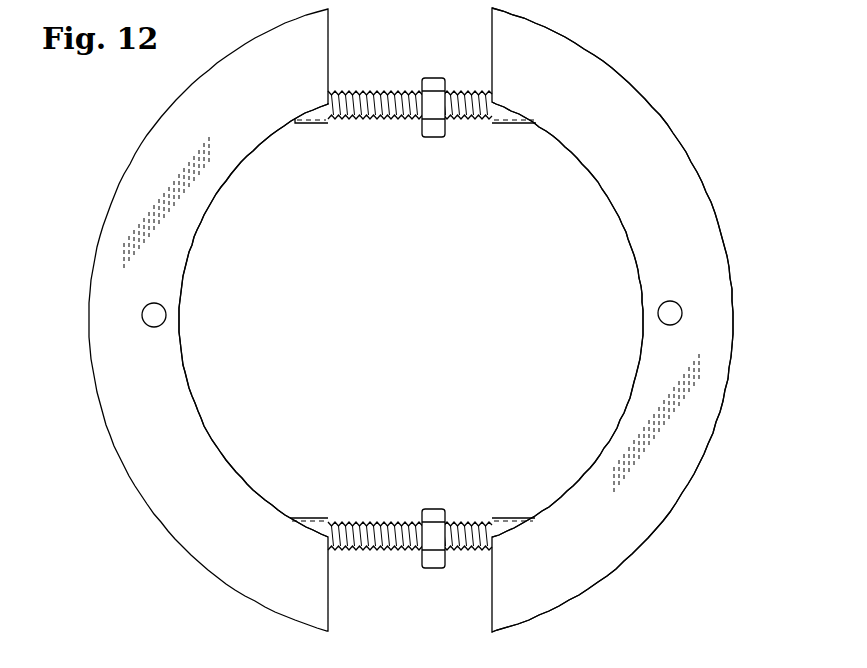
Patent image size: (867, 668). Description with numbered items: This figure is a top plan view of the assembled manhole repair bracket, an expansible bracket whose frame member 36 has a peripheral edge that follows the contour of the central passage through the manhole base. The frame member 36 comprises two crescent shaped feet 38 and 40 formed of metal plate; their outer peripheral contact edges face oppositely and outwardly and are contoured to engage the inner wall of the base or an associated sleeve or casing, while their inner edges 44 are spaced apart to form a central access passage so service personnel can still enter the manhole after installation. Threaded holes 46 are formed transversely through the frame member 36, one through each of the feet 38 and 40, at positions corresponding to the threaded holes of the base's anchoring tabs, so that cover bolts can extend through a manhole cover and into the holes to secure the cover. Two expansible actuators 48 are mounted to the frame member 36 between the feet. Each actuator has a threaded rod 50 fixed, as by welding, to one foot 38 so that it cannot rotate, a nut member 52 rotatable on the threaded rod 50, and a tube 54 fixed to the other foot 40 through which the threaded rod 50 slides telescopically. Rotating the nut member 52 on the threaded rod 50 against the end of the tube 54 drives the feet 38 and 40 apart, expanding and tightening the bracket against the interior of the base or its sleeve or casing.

The frame member 36 is at (668, 160).
The crescent shaped foot 38 is at (632, 112).
The crescent shaped foot 40 is at (156, 162).
The inner edges 44 is at (180, 318).
The threaded holes 46 is at (142, 315).
The expansible actuators 48 is at (410, 321).
The threaded rod 50 is at (378, 121).
The nut member 52 is at (433, 138).
The tube 54 is at (317, 126).